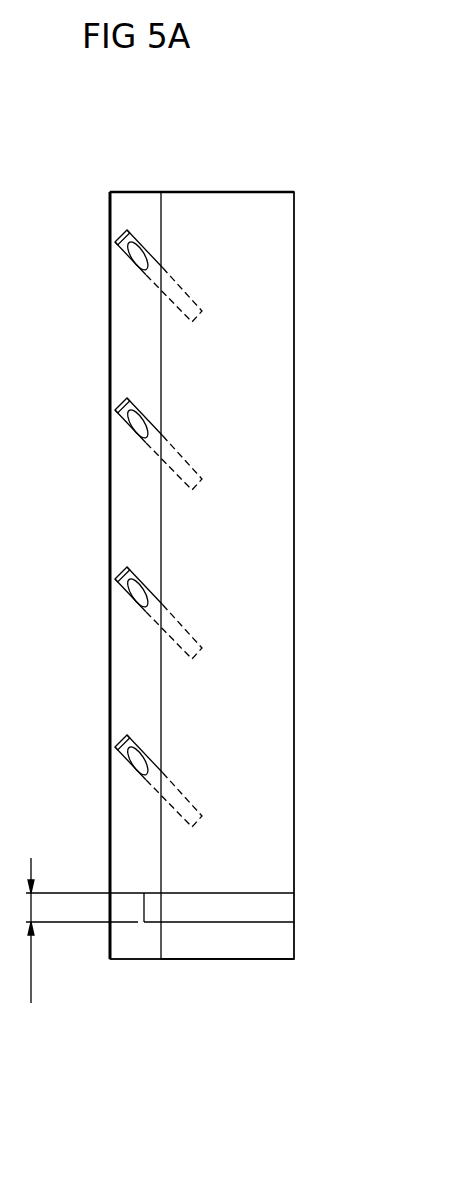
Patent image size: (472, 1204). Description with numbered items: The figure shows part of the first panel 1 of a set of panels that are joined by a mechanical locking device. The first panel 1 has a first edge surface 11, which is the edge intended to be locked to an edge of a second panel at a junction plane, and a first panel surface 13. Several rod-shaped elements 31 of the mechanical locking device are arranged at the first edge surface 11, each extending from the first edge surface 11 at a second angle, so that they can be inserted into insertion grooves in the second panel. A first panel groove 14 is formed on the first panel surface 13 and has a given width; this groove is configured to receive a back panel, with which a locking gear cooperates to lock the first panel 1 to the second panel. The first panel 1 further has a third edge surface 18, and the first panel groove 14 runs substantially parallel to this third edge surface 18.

The first panel 1 is at (207, 191).
The first edge surface 11 is at (132, 338).
The first panel surface 13 is at (255, 430).
The first panel groove 14 is at (275, 910).
The third edge surface 18 is at (232, 960).
The rod-shaped element 31 is at (120, 247).